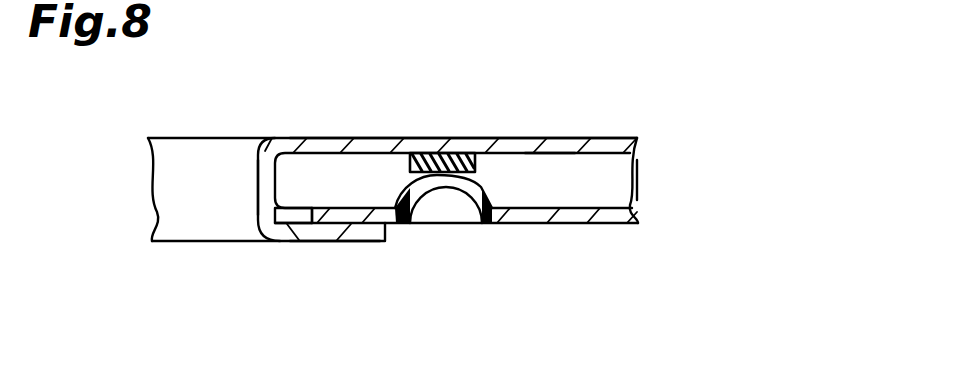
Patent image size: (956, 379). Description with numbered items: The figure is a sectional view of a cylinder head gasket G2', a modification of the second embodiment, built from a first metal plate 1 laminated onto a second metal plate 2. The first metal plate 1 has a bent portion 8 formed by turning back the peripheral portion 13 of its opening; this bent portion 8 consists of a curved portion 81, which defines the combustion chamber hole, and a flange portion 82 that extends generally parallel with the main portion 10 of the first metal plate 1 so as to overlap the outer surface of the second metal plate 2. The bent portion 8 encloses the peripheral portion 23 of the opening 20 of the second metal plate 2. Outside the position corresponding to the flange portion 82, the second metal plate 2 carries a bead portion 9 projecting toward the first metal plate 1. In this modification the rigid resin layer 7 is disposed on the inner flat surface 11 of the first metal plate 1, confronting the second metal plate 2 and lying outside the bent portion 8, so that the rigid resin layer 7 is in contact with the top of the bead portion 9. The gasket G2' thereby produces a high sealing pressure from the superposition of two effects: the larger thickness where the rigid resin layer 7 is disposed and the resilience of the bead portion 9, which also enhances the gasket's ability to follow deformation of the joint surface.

The first metal plate 1 is at (600, 147).
The second metal plate 2 is at (565, 213).
The rigid resin layer 7 is at (447, 157).
The bent portion 8 is at (396, 254).
The peripheral portion 13 is at (396, 254).
The bead portion 9 is at (448, 185).
The main portion 10 is at (497, 147).
The inner flat surface 11 is at (537, 153).
The opening 20 is at (295, 215).
The peripheral portion 23 is at (355, 212).
The curved portion 81 is at (262, 192).
The flange portion 82 is at (354, 228).
The gasket G2' is at (713, 127).